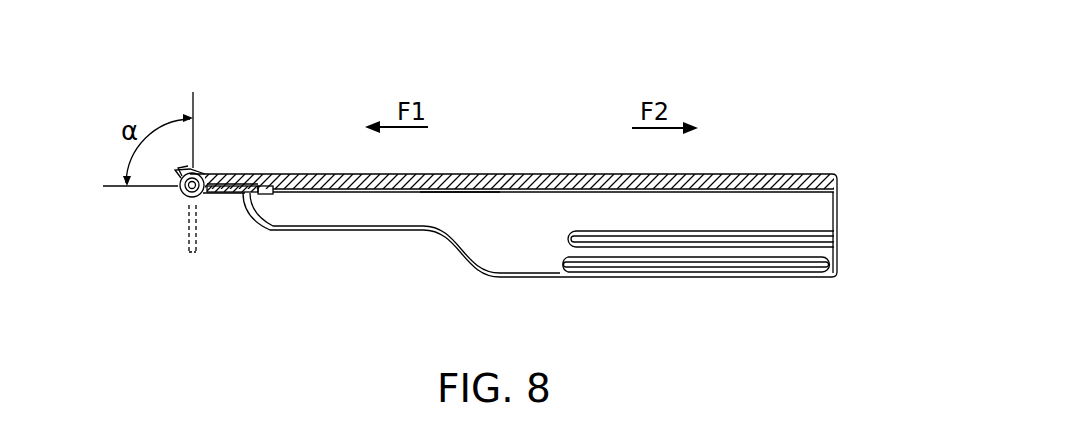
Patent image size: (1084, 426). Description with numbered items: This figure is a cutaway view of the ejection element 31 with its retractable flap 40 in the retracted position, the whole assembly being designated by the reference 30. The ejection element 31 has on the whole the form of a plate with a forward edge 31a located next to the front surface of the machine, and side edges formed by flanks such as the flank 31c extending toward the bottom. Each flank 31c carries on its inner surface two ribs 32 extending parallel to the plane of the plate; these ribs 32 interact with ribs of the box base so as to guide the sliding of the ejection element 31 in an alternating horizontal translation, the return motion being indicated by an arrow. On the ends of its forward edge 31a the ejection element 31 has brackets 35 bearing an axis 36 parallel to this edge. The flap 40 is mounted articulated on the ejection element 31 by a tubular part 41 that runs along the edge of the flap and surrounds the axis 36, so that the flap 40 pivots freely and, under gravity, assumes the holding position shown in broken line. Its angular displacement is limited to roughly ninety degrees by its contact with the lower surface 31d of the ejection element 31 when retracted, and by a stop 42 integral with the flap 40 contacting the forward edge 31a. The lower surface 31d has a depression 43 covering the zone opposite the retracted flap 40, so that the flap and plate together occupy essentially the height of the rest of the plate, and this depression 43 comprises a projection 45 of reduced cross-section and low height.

The pinching device 30 is at (638, 54).
The ejection element 31 is at (482, 182).
The forward edge 31a is at (208, 172).
The flank 31c is at (503, 262).
The lower surface 31d is at (460, 192).
The ribs 32 is at (833, 236).
The brackets 35 is at (184, 188).
The axis 36 is at (183, 193).
The retractable flap 40 is at (220, 193).
The tubular part 41 is at (190, 197).
The stop 42 is at (191, 168).
The depression 43 is at (268, 189).
The projection 45 is at (248, 184).